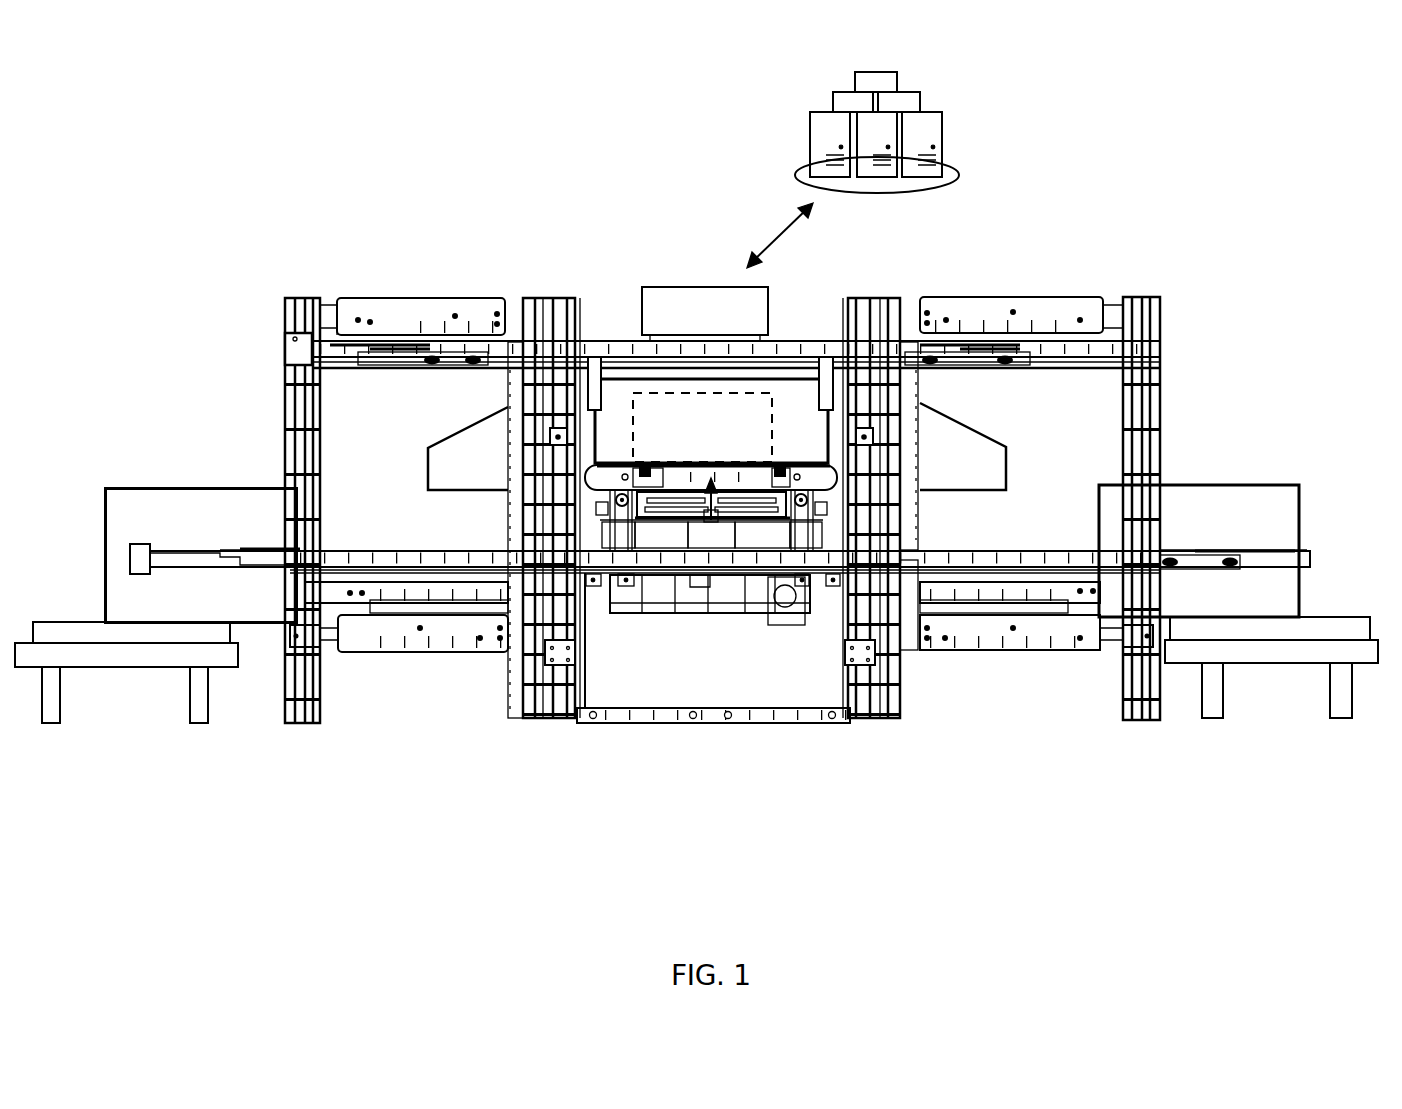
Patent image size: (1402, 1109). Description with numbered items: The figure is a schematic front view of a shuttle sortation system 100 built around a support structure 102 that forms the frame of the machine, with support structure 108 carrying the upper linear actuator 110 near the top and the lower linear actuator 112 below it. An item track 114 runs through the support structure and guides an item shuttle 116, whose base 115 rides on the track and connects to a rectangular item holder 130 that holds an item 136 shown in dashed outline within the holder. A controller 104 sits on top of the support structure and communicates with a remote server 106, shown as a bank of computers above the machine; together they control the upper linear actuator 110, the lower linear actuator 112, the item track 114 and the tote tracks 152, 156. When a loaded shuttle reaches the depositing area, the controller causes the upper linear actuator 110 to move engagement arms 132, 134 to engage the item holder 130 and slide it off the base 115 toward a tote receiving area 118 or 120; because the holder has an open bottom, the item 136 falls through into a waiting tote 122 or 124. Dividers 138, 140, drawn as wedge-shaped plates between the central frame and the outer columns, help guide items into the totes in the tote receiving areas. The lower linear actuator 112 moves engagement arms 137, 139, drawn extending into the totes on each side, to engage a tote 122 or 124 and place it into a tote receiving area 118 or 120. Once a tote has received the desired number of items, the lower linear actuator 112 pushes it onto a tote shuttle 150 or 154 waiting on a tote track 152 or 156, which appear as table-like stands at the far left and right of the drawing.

The shuttle sortation system 100 is at (603, 122).
The machine frame 102 is at (469, 258).
The controller 104 is at (657, 285).
The remote server 106 is at (932, 117).
The support structure 108 is at (578, 636).
The upper linear actuator 110 is at (452, 367).
The lower linear actuator 112 is at (955, 549).
The item track 114 is at (660, 527).
The base 115 is at (920, 508).
The item shuttle 116 is at (711, 522).
The tote receiving area 118 is at (1027, 665).
The tote receiving area 120 is at (415, 665).
The tote 122 is at (1203, 483).
The tote 124 is at (213, 486).
The item holder 130 is at (637, 377).
The engagement arm 132 is at (600, 355).
The engagement arm 134 is at (826, 357).
The item 136 is at (758, 396).
The engagement arm 137 is at (175, 556).
The divider 138 is at (451, 490).
The engagement arm 139 is at (1268, 548).
The divider 140 is at (966, 424).
The tote shuttle 150 is at (1325, 617).
The tote track 152 is at (1290, 664).
The tote shuttle 154 is at (80, 620).
The tote track 156 is at (100, 668).